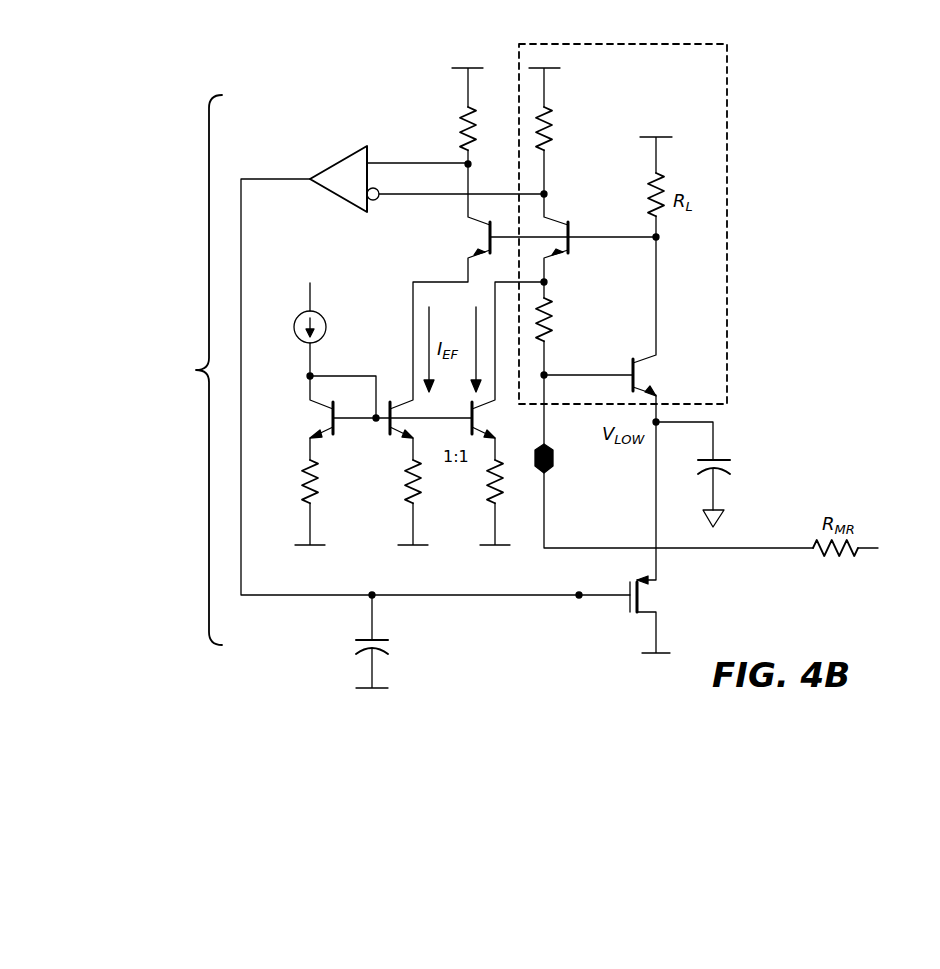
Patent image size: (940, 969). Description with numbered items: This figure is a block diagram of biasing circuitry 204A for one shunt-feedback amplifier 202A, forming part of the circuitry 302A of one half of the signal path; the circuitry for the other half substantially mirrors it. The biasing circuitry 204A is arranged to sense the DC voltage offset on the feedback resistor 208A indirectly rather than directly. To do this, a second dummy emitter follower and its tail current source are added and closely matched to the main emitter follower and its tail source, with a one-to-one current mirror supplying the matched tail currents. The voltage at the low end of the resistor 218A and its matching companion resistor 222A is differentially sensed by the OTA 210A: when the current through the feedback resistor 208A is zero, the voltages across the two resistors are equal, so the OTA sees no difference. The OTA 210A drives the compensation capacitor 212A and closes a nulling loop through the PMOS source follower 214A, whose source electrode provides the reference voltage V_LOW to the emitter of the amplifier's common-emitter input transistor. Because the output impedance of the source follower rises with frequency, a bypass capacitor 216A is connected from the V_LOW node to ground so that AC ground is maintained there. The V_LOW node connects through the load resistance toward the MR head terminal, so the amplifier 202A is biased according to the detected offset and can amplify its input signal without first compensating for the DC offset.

The circuitry 302A is at (235, 62).
The biasing circuitry 204A is at (180, 370).
The OTA 210A is at (335, 196).
The resistor 218A is at (465, 110).
The shunt-feedback amplifier 202A is at (728, 100).
The resistor 222A is at (549, 108).
The feedback resistor 208A is at (551, 300).
The bypass capacitor 216A is at (715, 458).
The PMOS transistor 214A is at (651, 610).
The compensation capacitor 212A is at (378, 640).